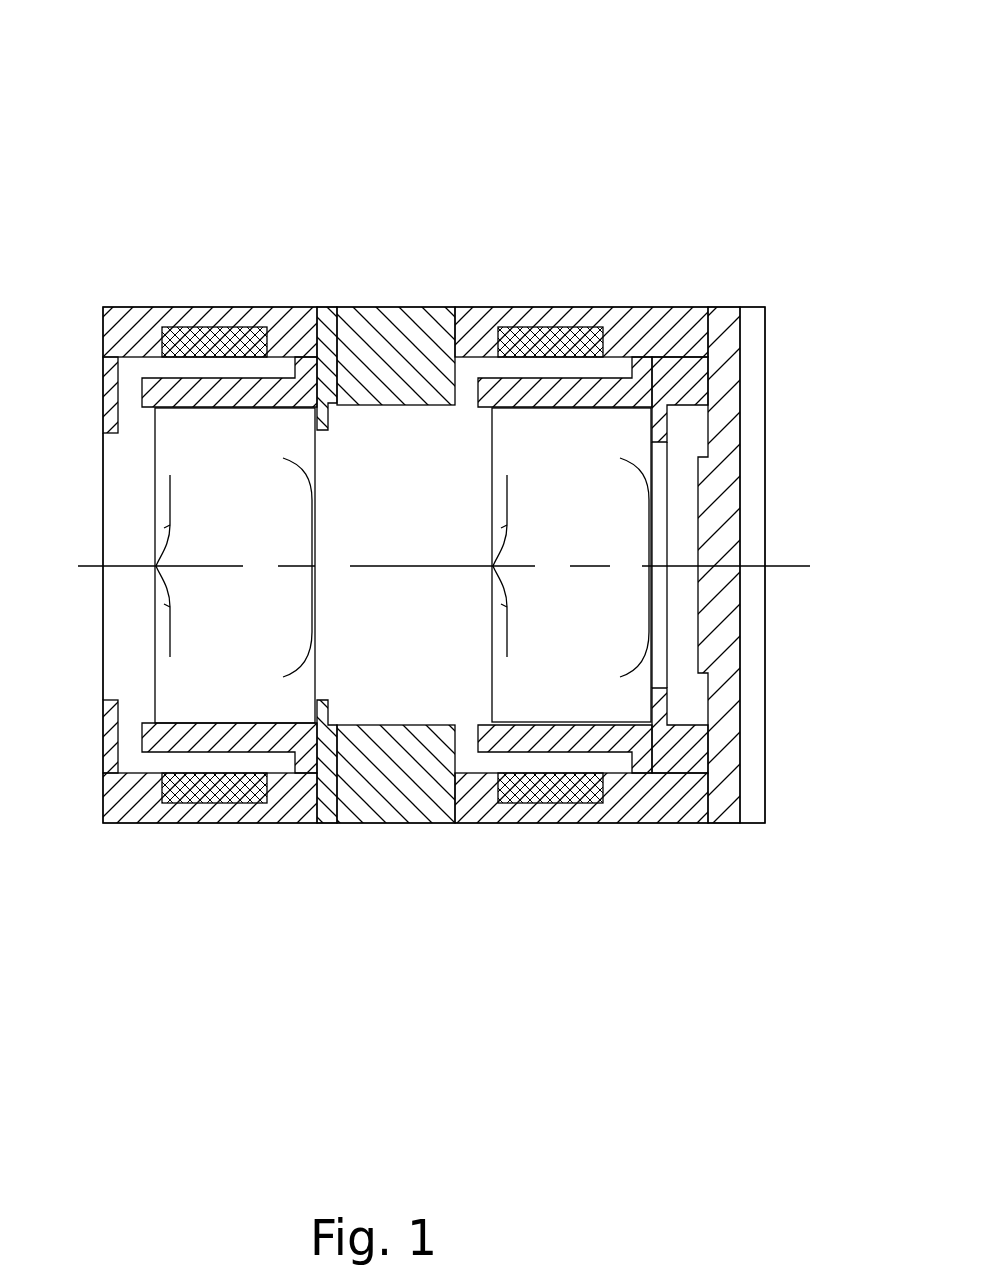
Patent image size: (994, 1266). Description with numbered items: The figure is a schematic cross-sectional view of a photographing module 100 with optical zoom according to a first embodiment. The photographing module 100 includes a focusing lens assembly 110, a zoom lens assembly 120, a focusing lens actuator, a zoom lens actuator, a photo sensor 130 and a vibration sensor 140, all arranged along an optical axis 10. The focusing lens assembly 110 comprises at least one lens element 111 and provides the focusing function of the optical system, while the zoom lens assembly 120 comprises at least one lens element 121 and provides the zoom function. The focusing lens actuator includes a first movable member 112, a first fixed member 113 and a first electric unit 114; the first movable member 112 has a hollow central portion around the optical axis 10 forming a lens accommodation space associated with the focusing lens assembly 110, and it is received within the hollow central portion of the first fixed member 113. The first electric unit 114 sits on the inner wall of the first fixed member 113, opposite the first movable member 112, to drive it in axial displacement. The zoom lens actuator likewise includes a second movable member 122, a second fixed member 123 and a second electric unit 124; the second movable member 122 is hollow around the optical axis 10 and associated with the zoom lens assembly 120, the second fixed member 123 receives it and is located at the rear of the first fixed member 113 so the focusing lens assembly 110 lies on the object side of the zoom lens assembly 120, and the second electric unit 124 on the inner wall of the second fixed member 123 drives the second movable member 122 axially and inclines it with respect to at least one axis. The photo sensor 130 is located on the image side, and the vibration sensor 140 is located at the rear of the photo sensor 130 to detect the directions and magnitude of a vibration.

The photographing module 100 is at (828, 31).
The optical axis 10 is at (463, 568).
The focusing lens assembly 110 is at (192, 462).
The lens element 111 is at (157, 552).
The first movable member 112 is at (205, 380).
The first fixed member 113 is at (130, 315).
The first electric unit 114 is at (183, 325).
The zoom lens assembly 120 is at (528, 462).
The lens element 121 is at (493, 552).
The second movable member 122 is at (541, 390).
The second fixed member 123 is at (463, 320).
The second electric unit 124 is at (522, 325).
The photo sensor 130 is at (705, 500).
The vibration sensor 140 is at (752, 355).